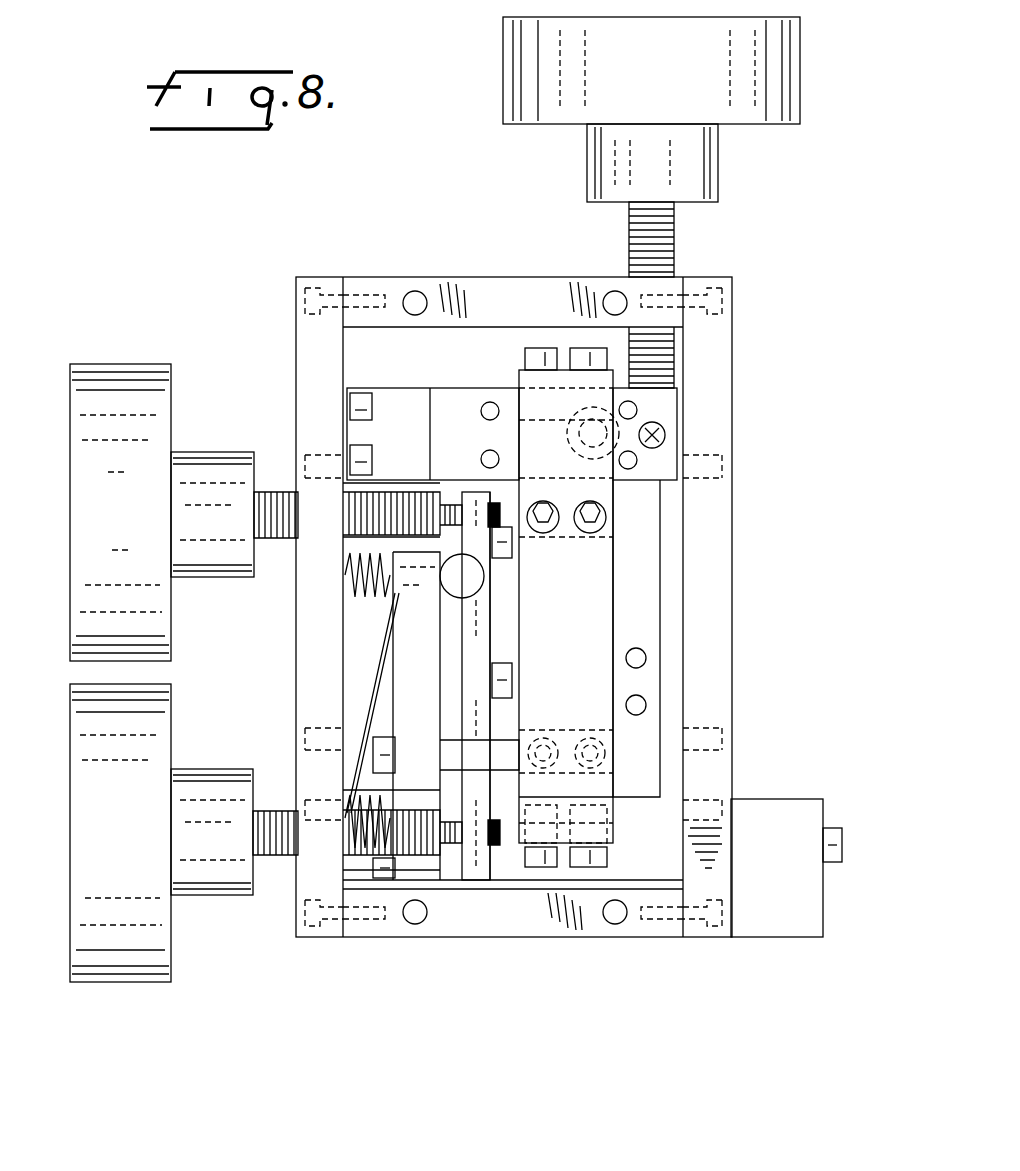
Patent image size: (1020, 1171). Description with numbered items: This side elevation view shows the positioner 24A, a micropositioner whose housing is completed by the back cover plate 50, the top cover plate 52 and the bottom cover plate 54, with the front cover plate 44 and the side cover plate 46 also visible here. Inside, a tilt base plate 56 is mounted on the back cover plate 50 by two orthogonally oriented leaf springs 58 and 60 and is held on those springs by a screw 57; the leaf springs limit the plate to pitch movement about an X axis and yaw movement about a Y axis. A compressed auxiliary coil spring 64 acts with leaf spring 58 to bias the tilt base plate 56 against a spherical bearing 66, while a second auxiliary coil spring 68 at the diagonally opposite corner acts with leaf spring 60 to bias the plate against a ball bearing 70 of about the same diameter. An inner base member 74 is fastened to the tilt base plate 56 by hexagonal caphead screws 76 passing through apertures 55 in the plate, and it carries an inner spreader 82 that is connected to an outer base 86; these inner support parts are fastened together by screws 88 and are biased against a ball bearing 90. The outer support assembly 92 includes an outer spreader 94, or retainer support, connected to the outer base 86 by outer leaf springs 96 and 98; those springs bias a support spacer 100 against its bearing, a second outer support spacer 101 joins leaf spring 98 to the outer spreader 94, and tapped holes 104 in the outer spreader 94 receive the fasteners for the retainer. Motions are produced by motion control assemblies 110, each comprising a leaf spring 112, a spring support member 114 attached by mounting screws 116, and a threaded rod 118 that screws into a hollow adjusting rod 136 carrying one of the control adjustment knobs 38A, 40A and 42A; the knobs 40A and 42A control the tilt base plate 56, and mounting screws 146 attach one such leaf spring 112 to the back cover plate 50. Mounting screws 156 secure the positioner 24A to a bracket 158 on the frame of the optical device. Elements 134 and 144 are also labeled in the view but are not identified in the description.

The positioner 24A is at (516, 233).
The control adjustment knob 38A is at (798, 90).
The adjustment control knob 40A is at (105, 975).
The adjustment control knob 42A is at (125, 375).
The front cover plate 44 is at (722, 637).
The side cover plate 46 is at (372, 335).
The back cover plate 50 is at (300, 359).
The top cover plate 52 is at (530, 282).
The bottom cover plate 54 is at (658, 934).
The apertures 55 is at (417, 718).
The tilt base plate 56 is at (430, 688).
The screw 57 is at (369, 622).
The leaf spring 58 is at (372, 680).
The leaf spring 60 is at (360, 882).
The auxiliary coil spring 64 is at (383, 560).
The spherical bearing 66 is at (445, 600).
The auxiliary coil spring 68 is at (360, 782).
The ball bearing 70 is at (470, 882).
The inner base member 74 is at (520, 742).
The hexagonal caphead screws 76 is at (380, 738).
The inner spreader 82 is at (600, 540).
The outer base 86 is at (613, 792).
The screws 88 is at (590, 535).
The ball bearing 90 is at (614, 490).
The outer support assembly 92 is at (681, 630).
The outer spreader 94 is at (668, 610).
The outer leaf spring 96 is at (523, 352).
The outer leaf spring 98 is at (612, 848).
The support spacer 100 is at (518, 380).
The second outer support spacer 101 is at (613, 812).
The tapped holes 104 is at (646, 705).
The motion control assembly 110 is at (356, 384).
The leaf spring 112 is at (418, 388).
The spring support member 114 is at (440, 395).
The mounting screws 116 is at (505, 528).
The threaded rod 118 is at (453, 498).
The drive block 134 is at (655, 435).
The hollow adjusting rod 136 is at (676, 246).
The lower plate 144 is at (445, 882).
The mounting screws 146 is at (372, 405).
The mounting screws 156 is at (842, 845).
The bracket 158 is at (792, 915).